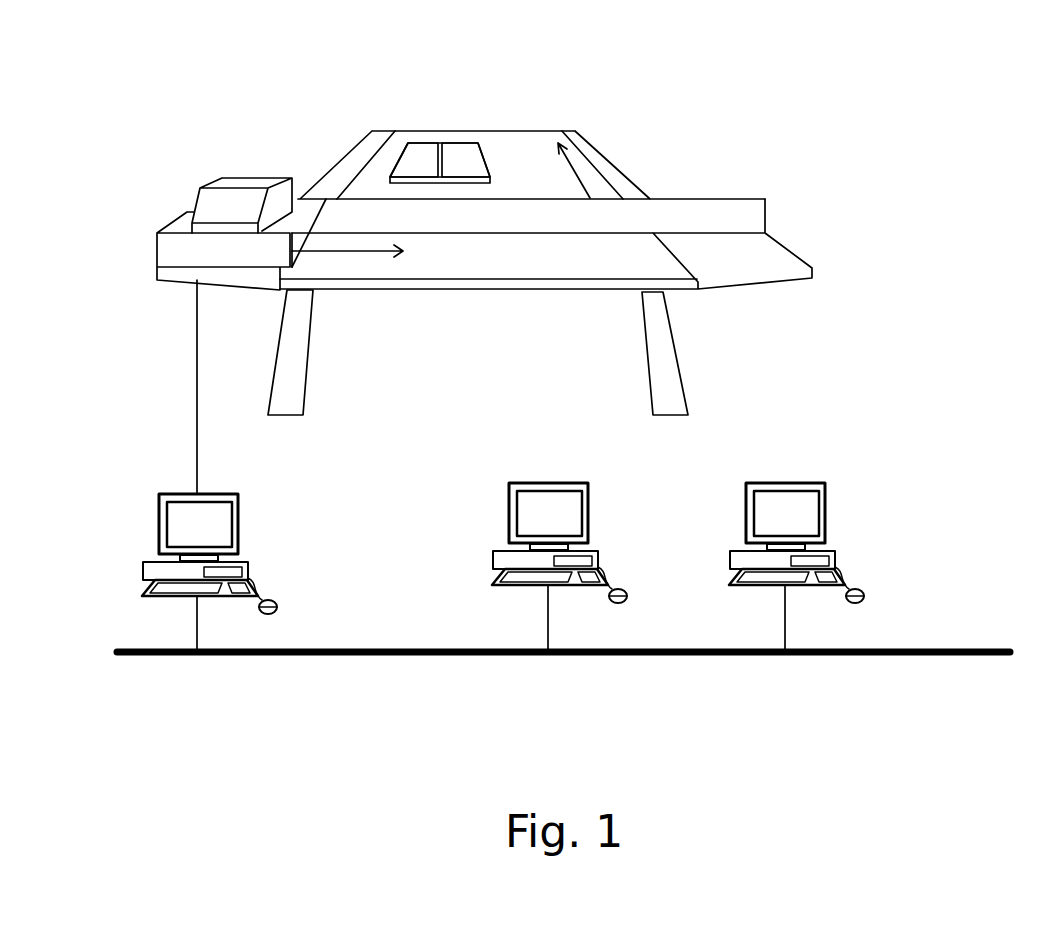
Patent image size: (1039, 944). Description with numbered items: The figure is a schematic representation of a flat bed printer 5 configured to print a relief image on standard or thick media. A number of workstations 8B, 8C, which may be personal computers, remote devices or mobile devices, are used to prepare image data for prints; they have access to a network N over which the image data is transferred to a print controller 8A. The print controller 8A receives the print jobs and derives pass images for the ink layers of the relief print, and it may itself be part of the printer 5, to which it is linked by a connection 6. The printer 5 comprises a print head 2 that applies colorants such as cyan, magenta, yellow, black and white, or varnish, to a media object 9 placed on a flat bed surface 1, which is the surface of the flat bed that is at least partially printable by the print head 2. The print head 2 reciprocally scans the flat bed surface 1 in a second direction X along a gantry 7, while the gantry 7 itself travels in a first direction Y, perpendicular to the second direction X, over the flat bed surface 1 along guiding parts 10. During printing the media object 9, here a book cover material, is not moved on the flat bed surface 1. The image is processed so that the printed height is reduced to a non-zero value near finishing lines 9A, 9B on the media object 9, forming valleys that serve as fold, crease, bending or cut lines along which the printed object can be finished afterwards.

The flat bed surface 1 is at (400, 143).
The print head 2 is at (213, 182).
The printer 5 is at (855, 290).
The cable connection 6 is at (197, 430).
The gantry 7 is at (713, 212).
The print controller 8A is at (250, 568).
The workstation 8B is at (605, 558).
The workstation 8C is at (842, 558).
The media object 9 is at (468, 148).
The finishing line 9A is at (435, 156).
The finishing line 9B is at (445, 173).
The guiding parts 10 is at (322, 190).
The network N is at (980, 648).
The second direction X is at (342, 252).
The first direction Y is at (576, 176).